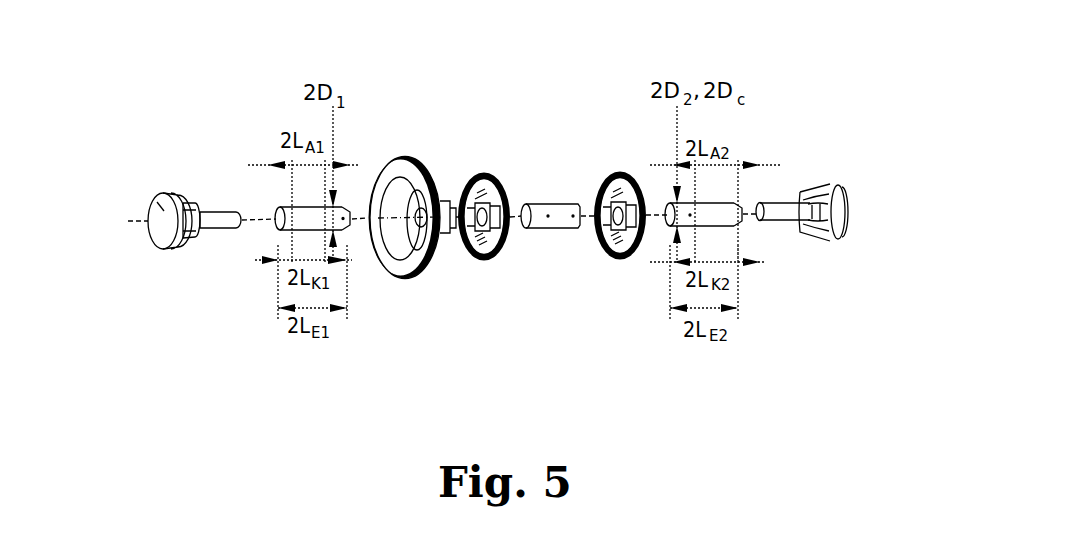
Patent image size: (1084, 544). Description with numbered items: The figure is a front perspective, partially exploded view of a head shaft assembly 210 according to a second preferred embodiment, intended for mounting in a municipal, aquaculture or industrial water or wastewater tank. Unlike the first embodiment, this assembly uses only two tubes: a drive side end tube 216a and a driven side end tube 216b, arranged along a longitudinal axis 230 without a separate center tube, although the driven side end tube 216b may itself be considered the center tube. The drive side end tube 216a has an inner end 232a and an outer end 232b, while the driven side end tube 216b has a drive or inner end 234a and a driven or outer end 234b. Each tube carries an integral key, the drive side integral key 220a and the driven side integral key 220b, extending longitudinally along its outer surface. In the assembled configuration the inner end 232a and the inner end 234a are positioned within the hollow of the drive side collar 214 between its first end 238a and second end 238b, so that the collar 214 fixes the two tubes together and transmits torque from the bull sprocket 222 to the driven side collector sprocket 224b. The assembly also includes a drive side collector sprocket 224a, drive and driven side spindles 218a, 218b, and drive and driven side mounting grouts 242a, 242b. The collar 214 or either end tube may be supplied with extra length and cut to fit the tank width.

The head shaft assembly 210 is at (527, 100).
The drive side collar 214 is at (555, 228).
The drive side end tube 216a is at (278, 226).
The driven side end tube 216b is at (748, 222).
The drive side spindle 218a is at (187, 205).
The driven side spindle 218b is at (848, 218).
The drive side integral key 220a is at (277, 212).
The driven side integral key 220b is at (740, 202).
The bull sprocket 222 is at (403, 171).
The drive side collector sprocket 224a is at (479, 265).
The driven side collector sprocket 224b is at (630, 250).
The longitudinal axis 230 is at (140, 220).
The inner end of drive side end tube 232a is at (352, 222).
The outer end of drive side end tube 232b is at (317, 222).
The drive or inner end of driven side end tube 234a is at (634, 190).
The driven or outer end of driven side end tube 234b is at (708, 214).
The first end of collar 238a is at (583, 199).
The second end of collar 238b is at (527, 230).
The drive side mounting grout 242a is at (157, 202).
The driven side mounting grout 242b is at (838, 187).